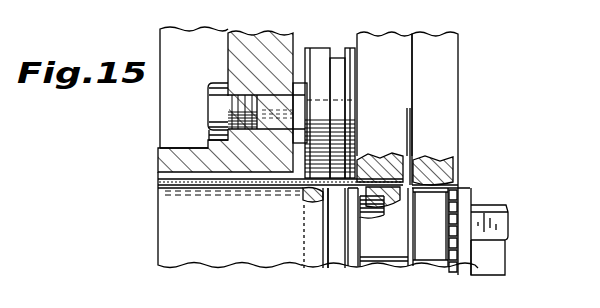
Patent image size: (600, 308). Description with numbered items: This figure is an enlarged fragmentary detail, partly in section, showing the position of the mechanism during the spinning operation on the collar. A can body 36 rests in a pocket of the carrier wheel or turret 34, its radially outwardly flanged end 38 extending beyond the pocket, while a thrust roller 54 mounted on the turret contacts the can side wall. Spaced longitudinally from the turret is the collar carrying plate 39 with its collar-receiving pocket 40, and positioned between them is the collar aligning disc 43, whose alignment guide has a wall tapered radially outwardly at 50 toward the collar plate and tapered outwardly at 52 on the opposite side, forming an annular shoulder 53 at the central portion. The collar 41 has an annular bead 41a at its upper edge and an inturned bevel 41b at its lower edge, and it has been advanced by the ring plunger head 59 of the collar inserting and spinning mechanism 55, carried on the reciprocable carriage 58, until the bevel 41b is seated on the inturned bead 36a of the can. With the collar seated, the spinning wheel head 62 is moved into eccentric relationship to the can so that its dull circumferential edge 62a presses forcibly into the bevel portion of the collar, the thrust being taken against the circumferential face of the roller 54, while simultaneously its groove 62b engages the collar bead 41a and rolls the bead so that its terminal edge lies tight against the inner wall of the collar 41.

The carrier wheel or turret 34 is at (261, 21).
The thrust roller 54 is at (317, 50).
The collar aligning disc 43 is at (377, 42).
The collar carrying plate 39 is at (447, 58).
The radially outward taper 52 is at (386, 146).
The flanged end 38 is at (400, 148).
The annular shoulder 53 is at (428, 158).
The collar-receiving pocket 40 is at (460, 182).
The radially outward taper 50 is at (403, 193).
The inturned bead 36a is at (300, 174).
The can body 36 is at (178, 183).
The inturned bevel 41b is at (310, 205).
The collar 41 is at (307, 222).
The dull circumferential edge 62a is at (327, 233).
The spinning wheel head 62 is at (347, 267).
The annular bead 41a is at (384, 227).
The ring plunger head 59 is at (385, 262).
The groove 62b is at (430, 227).
The collar inserting and spinning mechanism 55 is at (440, 259).
The reciprocable carriage 58 is at (500, 220).